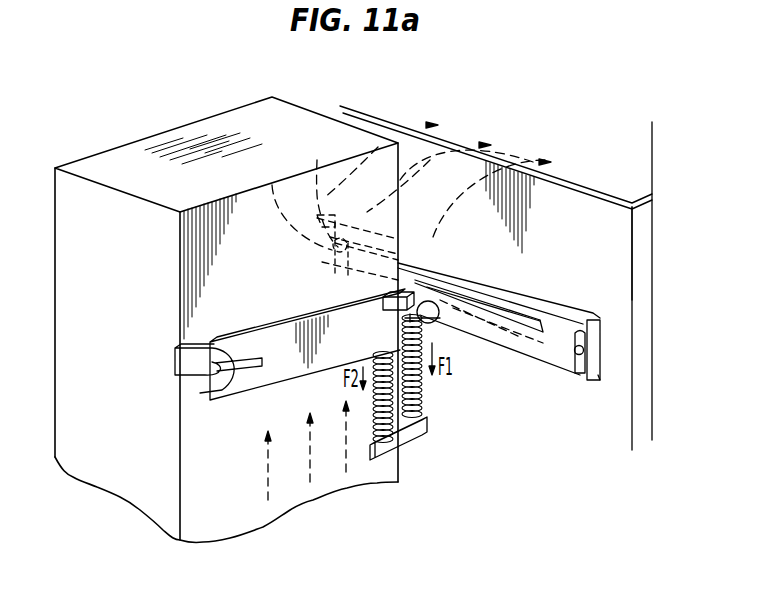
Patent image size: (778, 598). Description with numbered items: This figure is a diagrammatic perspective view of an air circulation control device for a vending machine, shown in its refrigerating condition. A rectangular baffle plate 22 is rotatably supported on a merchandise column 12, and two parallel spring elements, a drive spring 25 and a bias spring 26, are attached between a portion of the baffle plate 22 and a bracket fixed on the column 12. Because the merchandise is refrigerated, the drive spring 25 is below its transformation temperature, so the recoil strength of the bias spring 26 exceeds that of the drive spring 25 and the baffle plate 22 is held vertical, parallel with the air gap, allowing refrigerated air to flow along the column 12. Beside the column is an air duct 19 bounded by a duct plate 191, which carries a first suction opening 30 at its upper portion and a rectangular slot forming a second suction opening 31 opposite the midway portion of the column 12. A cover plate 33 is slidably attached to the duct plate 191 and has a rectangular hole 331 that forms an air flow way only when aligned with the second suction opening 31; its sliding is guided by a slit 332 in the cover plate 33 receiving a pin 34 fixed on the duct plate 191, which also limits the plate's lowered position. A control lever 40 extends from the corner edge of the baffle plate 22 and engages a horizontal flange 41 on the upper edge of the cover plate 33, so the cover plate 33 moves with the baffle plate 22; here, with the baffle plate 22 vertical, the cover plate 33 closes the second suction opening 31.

The column 12 is at (174, 141).
The air duct 19 is at (646, 373).
The duct plate 191 is at (618, 246).
The baffle plate 22 is at (270, 332).
The drive spring 25 is at (422, 398).
The bias spring 26 is at (373, 402).
The first suction opening 30 is at (633, 188).
The second suction opening 31 is at (523, 348).
The cover plate 33 is at (565, 360).
The pin 34 is at (584, 352).
The control lever 40 is at (420, 277).
The horizontal flange 41 is at (556, 300).
The rectangular hole 331 is at (490, 287).
The slit 332 is at (598, 378).